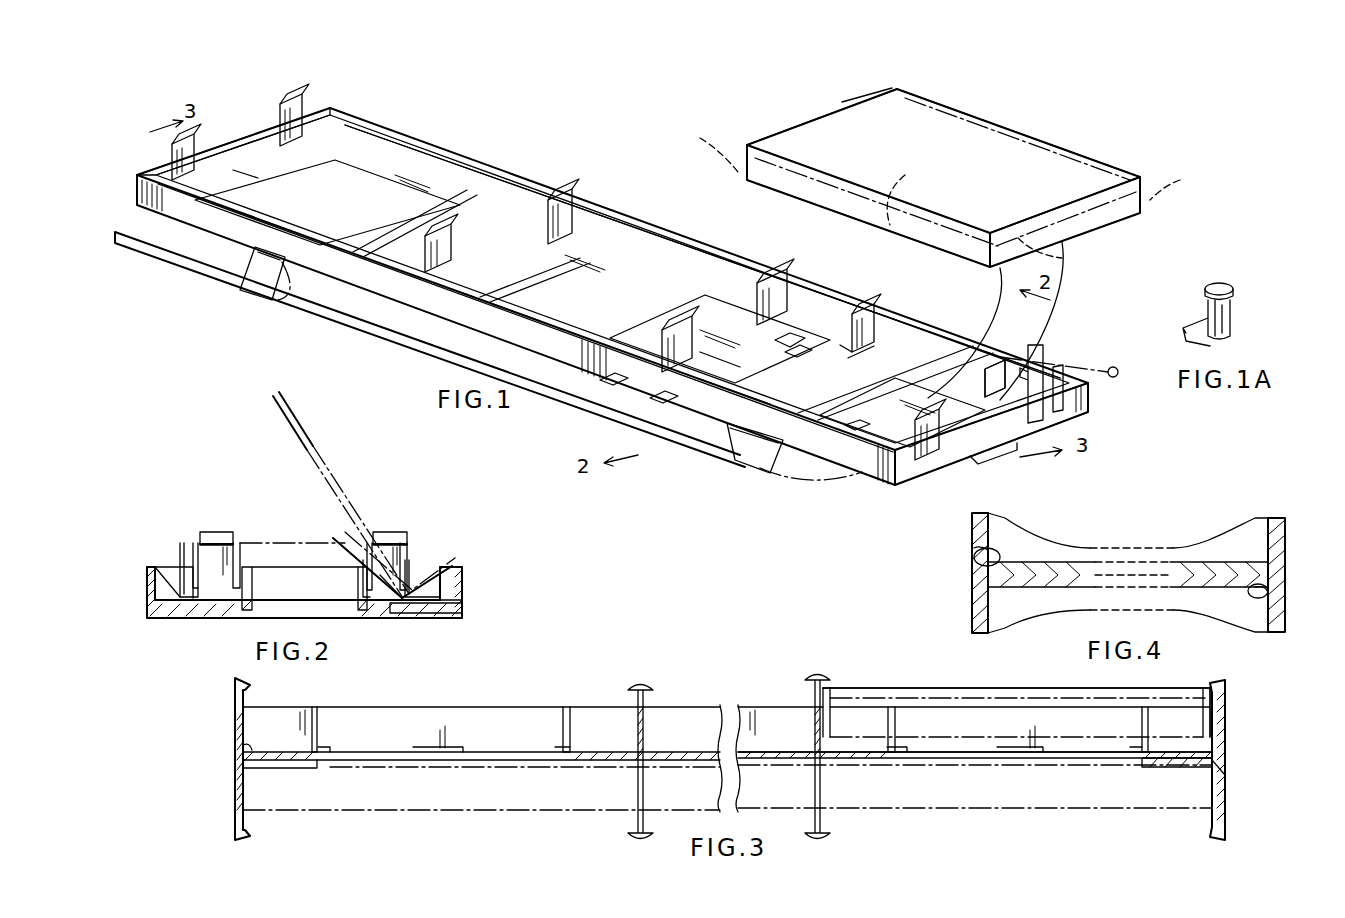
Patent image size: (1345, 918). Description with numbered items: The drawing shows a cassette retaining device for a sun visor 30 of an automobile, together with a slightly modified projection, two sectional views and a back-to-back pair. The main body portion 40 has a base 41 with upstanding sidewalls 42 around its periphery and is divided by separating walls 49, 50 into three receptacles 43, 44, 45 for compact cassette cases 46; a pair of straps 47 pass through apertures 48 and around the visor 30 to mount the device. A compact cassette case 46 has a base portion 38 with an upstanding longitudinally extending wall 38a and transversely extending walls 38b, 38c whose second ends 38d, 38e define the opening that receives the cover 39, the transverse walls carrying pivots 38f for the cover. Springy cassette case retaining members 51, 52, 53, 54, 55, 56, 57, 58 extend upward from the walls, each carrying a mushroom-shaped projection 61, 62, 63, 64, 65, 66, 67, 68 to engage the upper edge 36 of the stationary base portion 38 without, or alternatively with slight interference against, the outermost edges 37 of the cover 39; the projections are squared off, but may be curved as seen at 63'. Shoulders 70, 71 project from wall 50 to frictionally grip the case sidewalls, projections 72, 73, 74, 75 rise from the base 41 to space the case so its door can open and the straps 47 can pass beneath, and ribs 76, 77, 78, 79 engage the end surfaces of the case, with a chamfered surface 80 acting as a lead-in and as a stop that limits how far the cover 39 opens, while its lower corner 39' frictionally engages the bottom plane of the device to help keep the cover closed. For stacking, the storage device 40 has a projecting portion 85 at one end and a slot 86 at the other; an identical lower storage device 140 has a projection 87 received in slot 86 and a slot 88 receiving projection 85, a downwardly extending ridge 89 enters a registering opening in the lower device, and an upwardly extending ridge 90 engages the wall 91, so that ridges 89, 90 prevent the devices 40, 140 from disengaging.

In FIG. 1, the sun visor 30 is at (355, 330).
In FIG. 1, the upper edge 36 is at (768, 137).
In FIG. 1, the outermost edges 37 is at (833, 115).
In FIG. 3, the outermost edges 37 is at (832, 692).
In FIG. 1, the base portion 38 is at (743, 176).
In FIG. 3, the base portion 38 is at (970, 750).
In FIG. 1, the longitudinally extending wall 38a is at (910, 191).
In FIG. 1, the first transversely extending wall 38b is at (1056, 254).
In FIG. 1, the second transversely extending wall 38c is at (704, 141).
In FIG. 1, the second end 38d is at (1183, 181).
In FIG. 1, the second end 38e is at (847, 97).
In FIG. 2, the pivot 38f is at (425, 555).
In FIG. 1, the cover 39 is at (943, 161).
In FIG. 2, the cover 39 is at (340, 496).
In FIG. 3, the cover 39 is at (1016, 696).
In FIG. 2, the lower corner 39' is at (407, 615).
In FIG. 1, the main body portion 40 is at (672, 215).
In FIG. 2, the main body portion 40 is at (475, 573).
In FIG. 4, the main body portion 40 is at (1294, 527).
In FIG. 3, the main body portion 40 is at (832, 682).
In FIG. 1, the base 41 is at (622, 215).
In FIG. 2, the base 41 is at (178, 616).
In FIG. 1, the sidewalls 42 is at (470, 145).
In FIG. 2, the sidewalls 42 is at (150, 618).
In FIG. 1, the receptacle 43 is at (258, 236).
In FIG. 1, the receptacle 44 is at (495, 316).
In FIG. 1, the receptacle 45 is at (735, 428).
In FIG. 1, the compact cassette case 46 is at (1107, 157).
In FIG. 2, the compact cassette case 46 is at (419, 514).
In FIG. 3, the compact cassette case 46 is at (1024, 680).
In FIG. 1, the straps 47 is at (260, 285).
In FIG. 1, the apertures 48 is at (282, 290).
In FIG. 1, the separating wall 49 is at (507, 248).
In FIG. 1, the separating wall 50 is at (775, 360).
In FIG. 1, the cassette case retaining member 51 is at (935, 440).
In FIG. 1, the cassette case retaining member 52 is at (1066, 406).
In FIG. 1, the cassette case retaining member 53 is at (668, 352).
In FIG. 2, the cassette case retaining member 53 is at (208, 540).
In FIG. 1, the cassette case retaining member 54 is at (805, 290).
In FIG. 2, the cassette case retaining member 54 is at (378, 550).
In FIG. 1, the cassette case retaining member 55 is at (430, 253).
In FIG. 1, the cassette case retaining member 56 is at (582, 202).
In FIG. 1, the cassette case retaining member 57 is at (170, 158).
In FIG. 1, the cassette case retaining member 58 is at (284, 122).
In FIG. 1, the projection 61 is at (905, 440).
In FIG. 1, the projection 62 is at (1058, 370).
In FIG. 1, the projection 63 is at (665, 309).
In FIG. 2, the projection 63 is at (231, 519).
In FIG. 1A, the curved projection 63' is at (1231, 299).
In FIG. 1, the projection 64 is at (785, 272).
In FIG. 2, the projection 64 is at (378, 530).
In FIG. 1, the projection 65 is at (430, 232).
In FIG. 1, the projection 66 is at (560, 180).
In FIG. 1, the projection 67 is at (158, 148).
In FIG. 1, the projection 68 is at (282, 96).
In FIG. 1, the shoulder 70 is at (740, 368).
In FIG. 1, the shoulder 71 is at (805, 338).
In FIG. 1, the projection 72 is at (610, 392).
In FIG. 2, the projection 72 is at (245, 612).
In FIG. 1, the projection 73 is at (800, 352).
In FIG. 2, the projection 73 is at (362, 612).
In FIG. 1, the projection 74 is at (888, 332).
In FIG. 2, the projection 74 is at (445, 614).
In FIG. 1, the projection 75 is at (948, 335).
In FIG. 1, the rib 76 is at (878, 300).
In FIG. 2, the rib 76 is at (465, 587).
In FIG. 1, the rib 77 is at (1060, 372).
In FIG. 1, the rib 78 is at (655, 400).
In FIG. 2, the rib 78 is at (160, 568).
In FIG. 1, the rib 79 is at (850, 428).
In FIG. 1, the chamfered surface 80 is at (857, 316).
In FIG. 2, the chamfered surface 80 is at (180, 550).
In FIG. 1, the projecting portion 85 is at (986, 458).
In FIG. 4, the projecting portion 85 is at (1280, 590).
In FIG. 3, the projecting portion 85 is at (1216, 772).
In FIG. 1, the slot 86 is at (245, 173).
In FIG. 4, the slot 86 is at (975, 550).
In FIG. 3, the slot 86 is at (238, 748).
In FIG. 4, the projection 87 is at (985, 560).
In FIG. 4, the slot 88 is at (1284, 598).
In FIG. 3, the ridge 89 is at (1150, 768).
In FIG. 3, the ridge 90 is at (318, 768).
In FIG. 1, the wall 91 is at (306, 178).
In FIG. 4, the storage device 140 is at (962, 609).
In FIG. 3, the storage device 140 is at (840, 840).